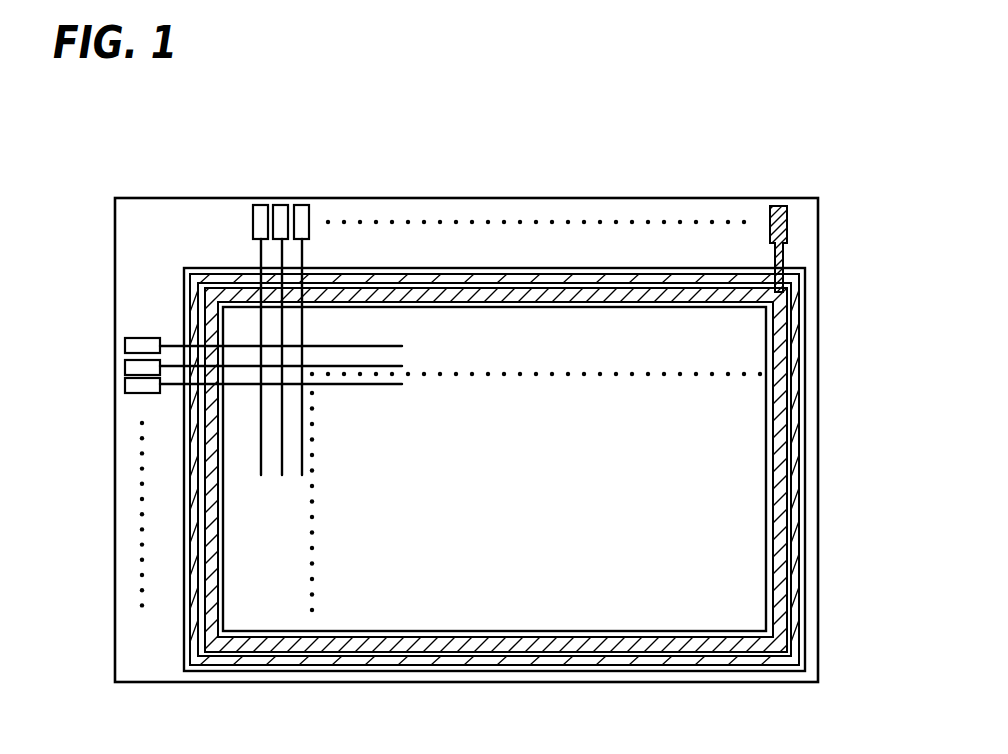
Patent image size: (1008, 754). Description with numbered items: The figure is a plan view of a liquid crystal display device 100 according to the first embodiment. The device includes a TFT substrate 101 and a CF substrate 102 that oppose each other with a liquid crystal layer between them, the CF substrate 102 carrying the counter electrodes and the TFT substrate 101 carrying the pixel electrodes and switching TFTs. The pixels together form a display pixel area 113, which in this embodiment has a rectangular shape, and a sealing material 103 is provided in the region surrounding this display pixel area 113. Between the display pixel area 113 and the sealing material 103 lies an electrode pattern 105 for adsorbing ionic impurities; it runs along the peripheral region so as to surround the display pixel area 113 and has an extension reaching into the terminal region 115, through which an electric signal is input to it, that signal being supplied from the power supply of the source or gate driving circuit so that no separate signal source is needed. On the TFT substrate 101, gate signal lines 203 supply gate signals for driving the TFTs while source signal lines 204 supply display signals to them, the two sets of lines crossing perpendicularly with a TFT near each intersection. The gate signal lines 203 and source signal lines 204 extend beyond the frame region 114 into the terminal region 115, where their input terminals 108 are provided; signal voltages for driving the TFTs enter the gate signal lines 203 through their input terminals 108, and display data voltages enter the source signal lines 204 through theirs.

The liquid crystal display device 100 is at (764, 86).
The TFT substrate 101 is at (546, 212).
The CF substrate 102 is at (182, 490).
The sealing material 103 is at (668, 280).
The electrode pattern 105 is at (789, 215).
The input terminals 108 is at (257, 223).
The display pixel area 113 is at (660, 588).
The frame region 114 is at (463, 267).
The terminal region 115 is at (146, 217).
The gate signal lines 203 is at (173, 387).
The source signal lines 204 is at (303, 254).